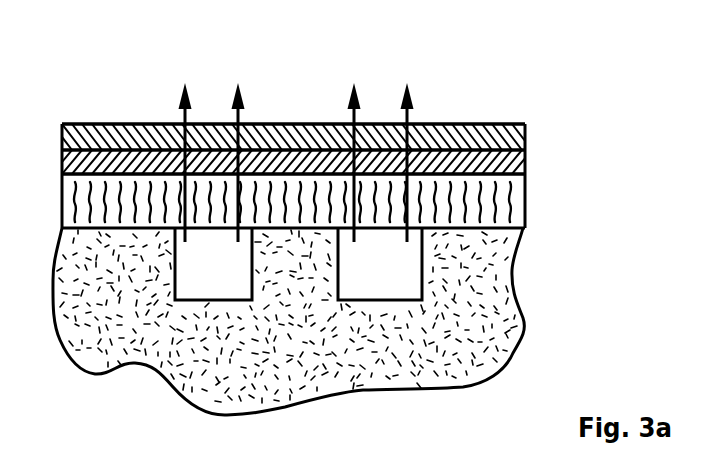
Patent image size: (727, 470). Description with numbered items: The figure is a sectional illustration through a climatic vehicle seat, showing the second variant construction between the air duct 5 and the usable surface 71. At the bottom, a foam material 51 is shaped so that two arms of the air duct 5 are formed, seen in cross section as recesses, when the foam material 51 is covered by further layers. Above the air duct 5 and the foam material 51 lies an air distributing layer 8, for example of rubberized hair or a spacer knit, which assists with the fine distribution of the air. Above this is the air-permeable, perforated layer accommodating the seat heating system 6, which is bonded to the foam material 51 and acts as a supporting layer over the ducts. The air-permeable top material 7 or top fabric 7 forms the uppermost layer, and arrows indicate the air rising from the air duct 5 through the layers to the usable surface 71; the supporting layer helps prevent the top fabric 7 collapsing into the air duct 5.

The usable surface 71 is at (145, 125).
The top material 7 is at (498, 124).
The seat heating system 6 is at (512, 166).
The air distributing layer 8 is at (512, 206).
The air duct 5 is at (385, 270).
The foam material 51 is at (527, 327).